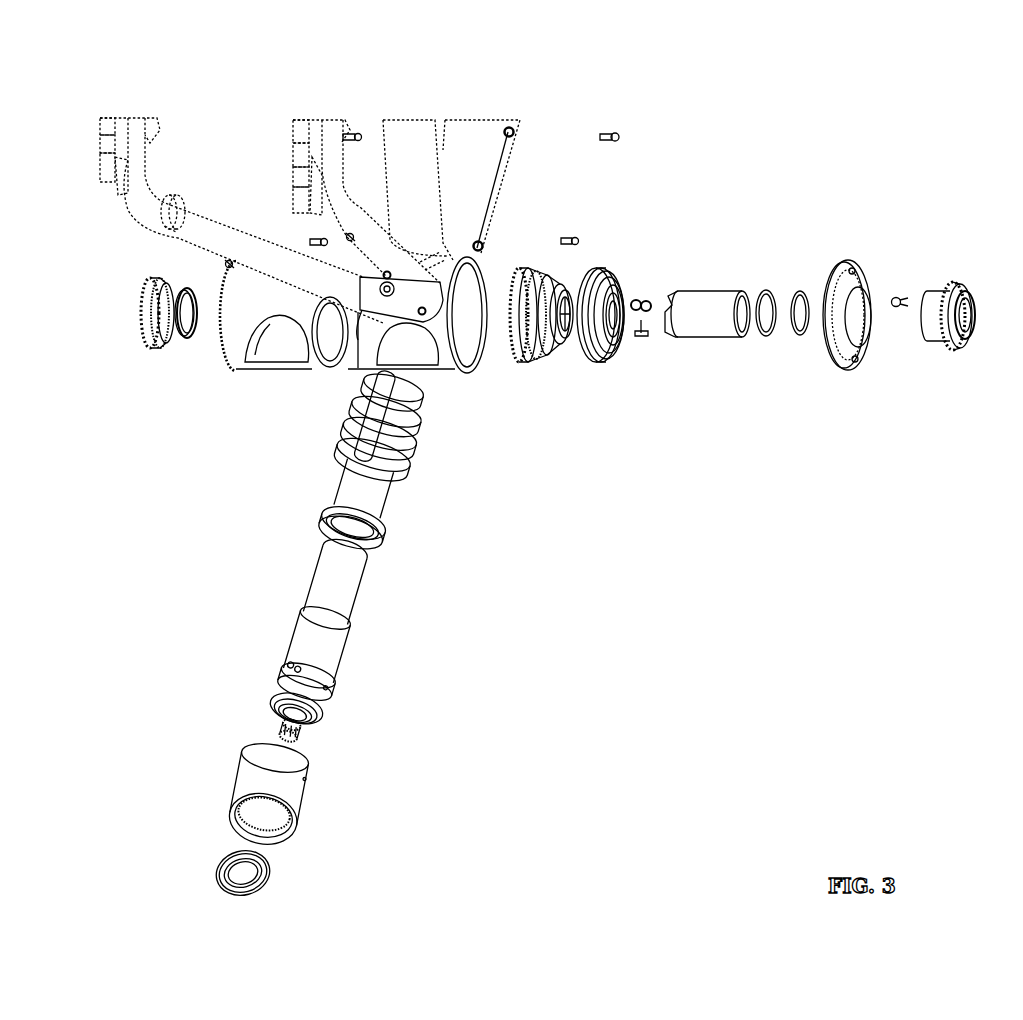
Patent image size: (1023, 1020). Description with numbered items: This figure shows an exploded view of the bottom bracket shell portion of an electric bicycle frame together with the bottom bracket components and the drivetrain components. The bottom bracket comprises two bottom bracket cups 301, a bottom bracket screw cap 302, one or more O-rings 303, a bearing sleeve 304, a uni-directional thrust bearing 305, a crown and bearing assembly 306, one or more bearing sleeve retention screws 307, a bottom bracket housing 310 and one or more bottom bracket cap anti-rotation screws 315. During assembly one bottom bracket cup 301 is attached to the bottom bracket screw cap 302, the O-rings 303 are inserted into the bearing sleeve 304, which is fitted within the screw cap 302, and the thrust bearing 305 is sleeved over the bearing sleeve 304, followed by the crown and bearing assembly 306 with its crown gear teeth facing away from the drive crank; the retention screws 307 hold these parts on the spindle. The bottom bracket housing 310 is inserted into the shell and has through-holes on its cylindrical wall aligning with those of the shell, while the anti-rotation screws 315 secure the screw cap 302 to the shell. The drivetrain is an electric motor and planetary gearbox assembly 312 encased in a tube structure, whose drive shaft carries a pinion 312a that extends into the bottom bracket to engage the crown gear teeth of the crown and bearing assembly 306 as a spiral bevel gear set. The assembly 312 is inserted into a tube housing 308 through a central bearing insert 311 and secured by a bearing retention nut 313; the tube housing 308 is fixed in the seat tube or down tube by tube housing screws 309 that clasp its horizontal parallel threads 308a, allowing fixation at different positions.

The bottom bracket cup 301 is at (152, 350).
The bottom bracket screw cap 302 is at (857, 260).
The O-rings 303 is at (800, 290).
The bearing sleeve 304 is at (687, 288).
The uni-directional thrust bearing 305 is at (600, 267).
The crown and bearing assembly 306 is at (530, 362).
The bearing sleeve retention screws 307 is at (638, 336).
The tube housing 308 is at (359, 460).
The horizontal parallel threads 308a is at (410, 462).
The tube housing screws 309 is at (621, 137).
The bottom bracket housing 310 is at (231, 378).
The central bearing insert 311 is at (236, 790).
The electric motor and planetary gearbox assembly 312 is at (290, 643).
The pinion 312a is at (298, 740).
The bearing retention nut 313 is at (217, 868).
The bottom bracket cap anti-rotation screws 315 is at (899, 309).